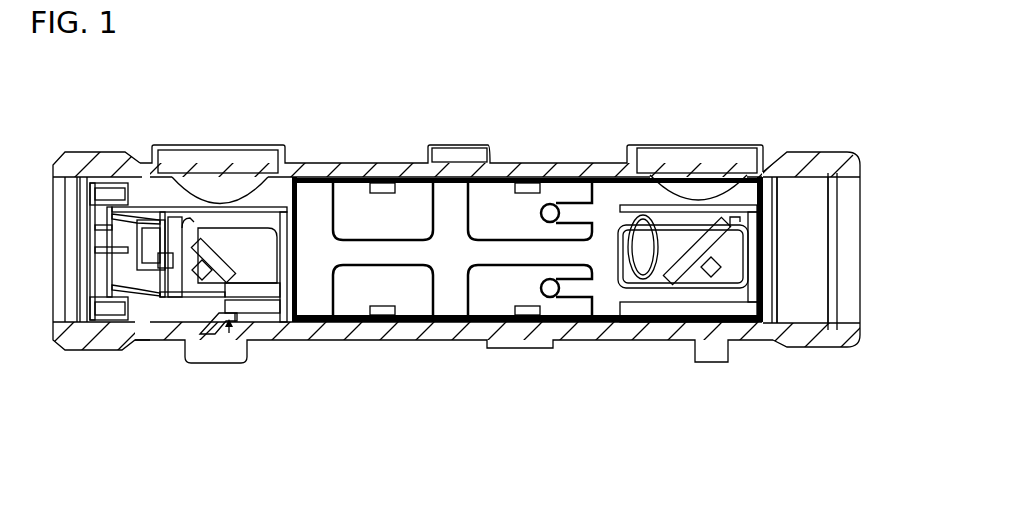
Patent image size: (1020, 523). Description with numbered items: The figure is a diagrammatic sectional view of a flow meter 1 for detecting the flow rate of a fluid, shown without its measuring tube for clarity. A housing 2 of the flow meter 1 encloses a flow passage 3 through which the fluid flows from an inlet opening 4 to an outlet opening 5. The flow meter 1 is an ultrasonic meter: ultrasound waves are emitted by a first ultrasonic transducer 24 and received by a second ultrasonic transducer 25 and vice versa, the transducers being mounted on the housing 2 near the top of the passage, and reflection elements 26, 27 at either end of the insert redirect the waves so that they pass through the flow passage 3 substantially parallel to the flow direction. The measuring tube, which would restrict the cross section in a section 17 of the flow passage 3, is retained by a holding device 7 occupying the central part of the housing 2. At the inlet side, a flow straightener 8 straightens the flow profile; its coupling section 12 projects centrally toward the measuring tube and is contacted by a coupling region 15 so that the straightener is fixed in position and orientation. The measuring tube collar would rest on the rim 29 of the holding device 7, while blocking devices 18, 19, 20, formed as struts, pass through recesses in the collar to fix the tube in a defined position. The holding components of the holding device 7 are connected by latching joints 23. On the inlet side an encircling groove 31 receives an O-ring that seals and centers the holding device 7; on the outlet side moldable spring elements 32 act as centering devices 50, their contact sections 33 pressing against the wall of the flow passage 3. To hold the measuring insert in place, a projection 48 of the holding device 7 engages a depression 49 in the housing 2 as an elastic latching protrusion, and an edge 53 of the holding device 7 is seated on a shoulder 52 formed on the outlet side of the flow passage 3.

The flow meter 1 is at (537, 96).
The housing 2 is at (355, 170).
The flow passage 3 is at (877, 211).
The inlet opening 4 is at (55, 265).
The outlet opening 5 is at (856, 322).
The holding device 7 is at (452, 203).
The flow straightener 8 is at (86, 305).
The coupling section 12 is at (150, 243).
The coupling region 15 is at (162, 268).
The section of the flow passage 17 is at (270, 343).
The blocking device 18 is at (248, 220).
The blocking device 19 is at (270, 316).
The blocking device 20 is at (274, 293).
The latching joint 23 is at (388, 190).
The first ultrasonic transducer 24 is at (200, 158).
The second ultrasonic transducer 25 is at (695, 157).
The reflection element 26 is at (210, 243).
The reflection element 27 is at (703, 257).
The rim 29 is at (270, 250).
The encircling groove 31 is at (300, 228).
The spring element 32 is at (569, 213).
The contact section 33 is at (549, 210).
The projection 48 is at (227, 331).
The depression 49 is at (230, 320).
The centering device 50 is at (570, 253).
The shoulder 52 is at (765, 172).
The edge 53 is at (774, 212).